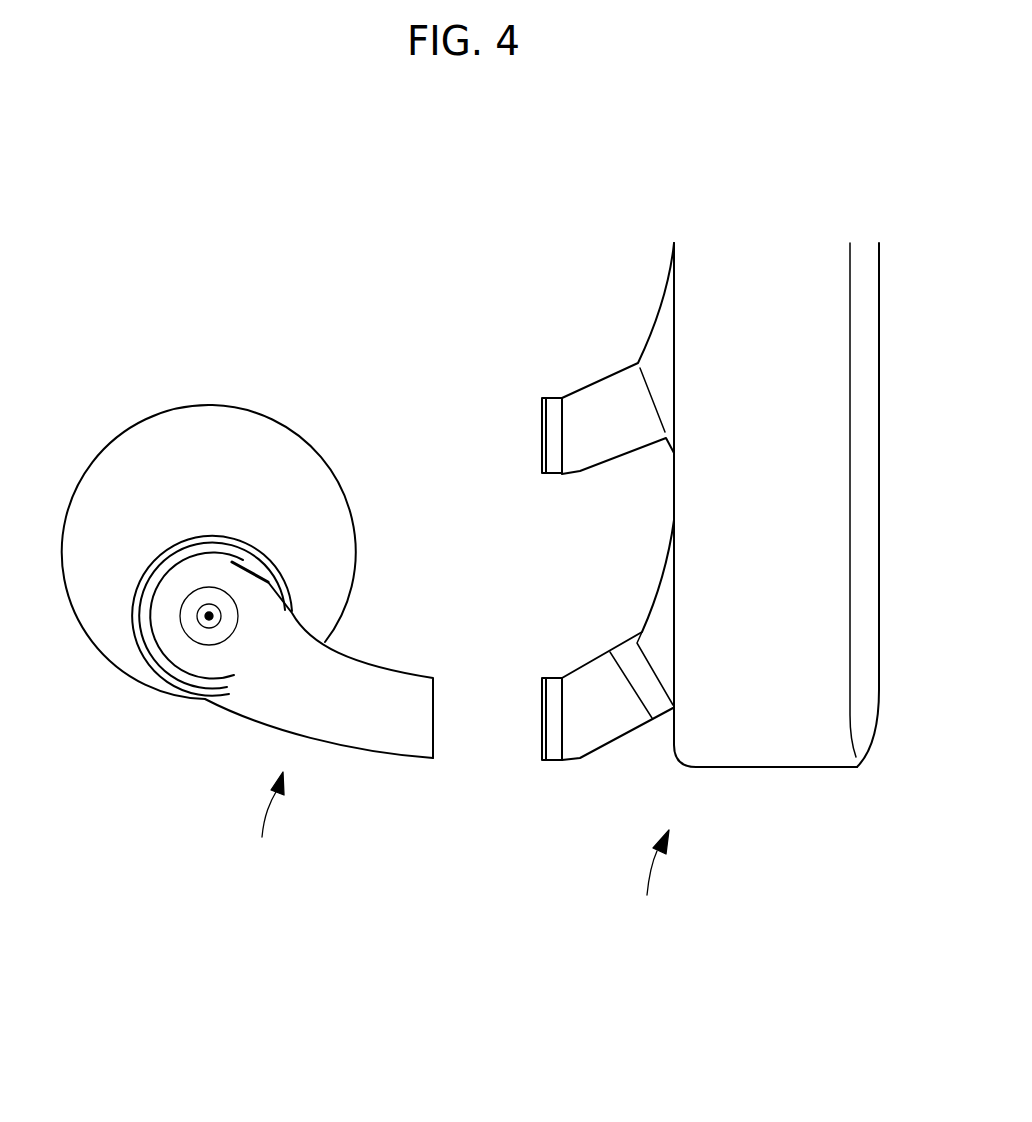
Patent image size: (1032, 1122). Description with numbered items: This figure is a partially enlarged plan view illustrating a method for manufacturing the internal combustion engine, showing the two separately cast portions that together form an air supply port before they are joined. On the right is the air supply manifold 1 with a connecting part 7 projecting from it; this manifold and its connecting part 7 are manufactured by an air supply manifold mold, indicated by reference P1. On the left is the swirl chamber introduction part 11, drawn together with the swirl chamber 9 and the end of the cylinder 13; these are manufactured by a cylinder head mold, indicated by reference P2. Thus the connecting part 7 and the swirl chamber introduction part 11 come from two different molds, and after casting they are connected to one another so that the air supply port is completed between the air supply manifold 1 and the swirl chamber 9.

The air supply manifold 1 is at (800, 770).
The connecting part 7 is at (587, 743).
The swirl chamber 9 is at (168, 604).
The swirl chamber introduction part 11 is at (355, 738).
The cylinder 13 is at (211, 404).
The air supply manifold mold portion P1 is at (650, 881).
The cylinder head mold portion P2 is at (264, 823).